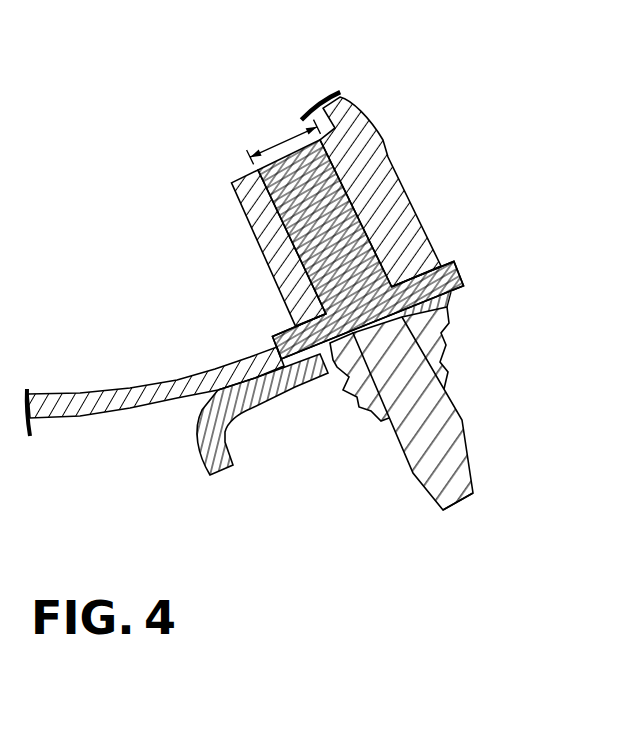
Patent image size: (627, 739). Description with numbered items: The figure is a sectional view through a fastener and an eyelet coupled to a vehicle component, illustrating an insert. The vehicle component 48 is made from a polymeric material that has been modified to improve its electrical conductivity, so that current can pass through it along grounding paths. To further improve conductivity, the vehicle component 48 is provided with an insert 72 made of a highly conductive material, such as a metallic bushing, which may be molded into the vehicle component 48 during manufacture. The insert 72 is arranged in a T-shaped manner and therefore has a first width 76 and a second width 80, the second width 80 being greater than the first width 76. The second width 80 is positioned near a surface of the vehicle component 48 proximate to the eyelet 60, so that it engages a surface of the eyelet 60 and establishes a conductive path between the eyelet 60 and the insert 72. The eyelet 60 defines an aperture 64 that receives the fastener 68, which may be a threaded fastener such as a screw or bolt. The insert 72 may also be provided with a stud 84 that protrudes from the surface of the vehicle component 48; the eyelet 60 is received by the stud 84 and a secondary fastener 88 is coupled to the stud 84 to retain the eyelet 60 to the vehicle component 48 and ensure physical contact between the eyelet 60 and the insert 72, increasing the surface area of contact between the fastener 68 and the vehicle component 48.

The vehicle component 48 is at (380, 127).
The eyelet 60 is at (232, 444).
The aperture 64 is at (318, 373).
The fastener 68 is at (453, 423).
The insert 72 is at (367, 217).
The first width 76 is at (287, 142).
The second width 80 is at (457, 268).
The stud 84 is at (460, 463).
The secondary fastener 88 is at (452, 357).